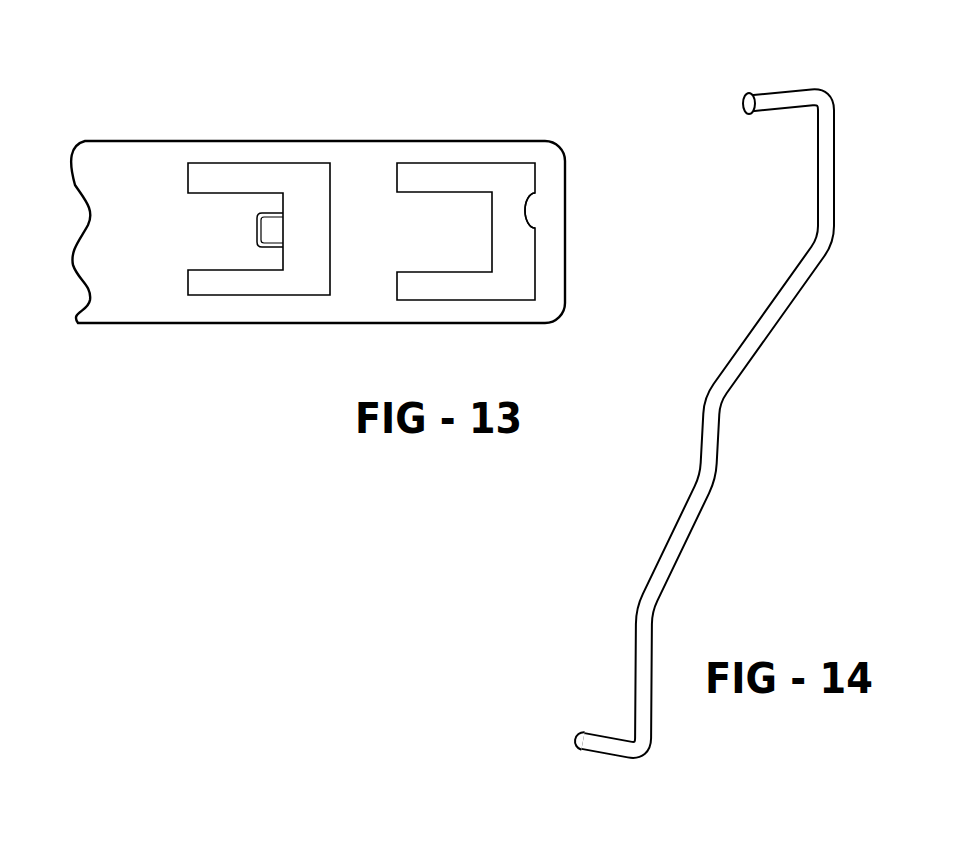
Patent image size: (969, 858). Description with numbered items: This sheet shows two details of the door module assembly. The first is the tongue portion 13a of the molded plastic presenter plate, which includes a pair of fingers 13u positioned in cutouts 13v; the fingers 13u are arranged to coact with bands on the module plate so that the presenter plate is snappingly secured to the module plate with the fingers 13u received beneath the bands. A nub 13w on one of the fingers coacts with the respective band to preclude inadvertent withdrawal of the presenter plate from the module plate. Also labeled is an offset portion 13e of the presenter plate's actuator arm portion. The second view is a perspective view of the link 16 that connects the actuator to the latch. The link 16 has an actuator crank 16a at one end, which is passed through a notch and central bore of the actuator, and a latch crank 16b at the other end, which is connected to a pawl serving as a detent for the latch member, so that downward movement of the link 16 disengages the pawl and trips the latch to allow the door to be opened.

In FIG. 13, the tongue portion 13a is at (383, 134).
In FIG. 13, the cutouts 13v is at (303, 167).
In FIG. 13, the fingers 13u is at (460, 202).
In FIG. 13, the nub 13w is at (272, 247).
In FIG. 13, the offset portion 13e is at (533, 228).
In FIG. 14, the link 16 is at (716, 504).
In FIG. 14, the actuator crank 16a is at (783, 95).
In FIG. 14, the latch crank 16b is at (598, 737).